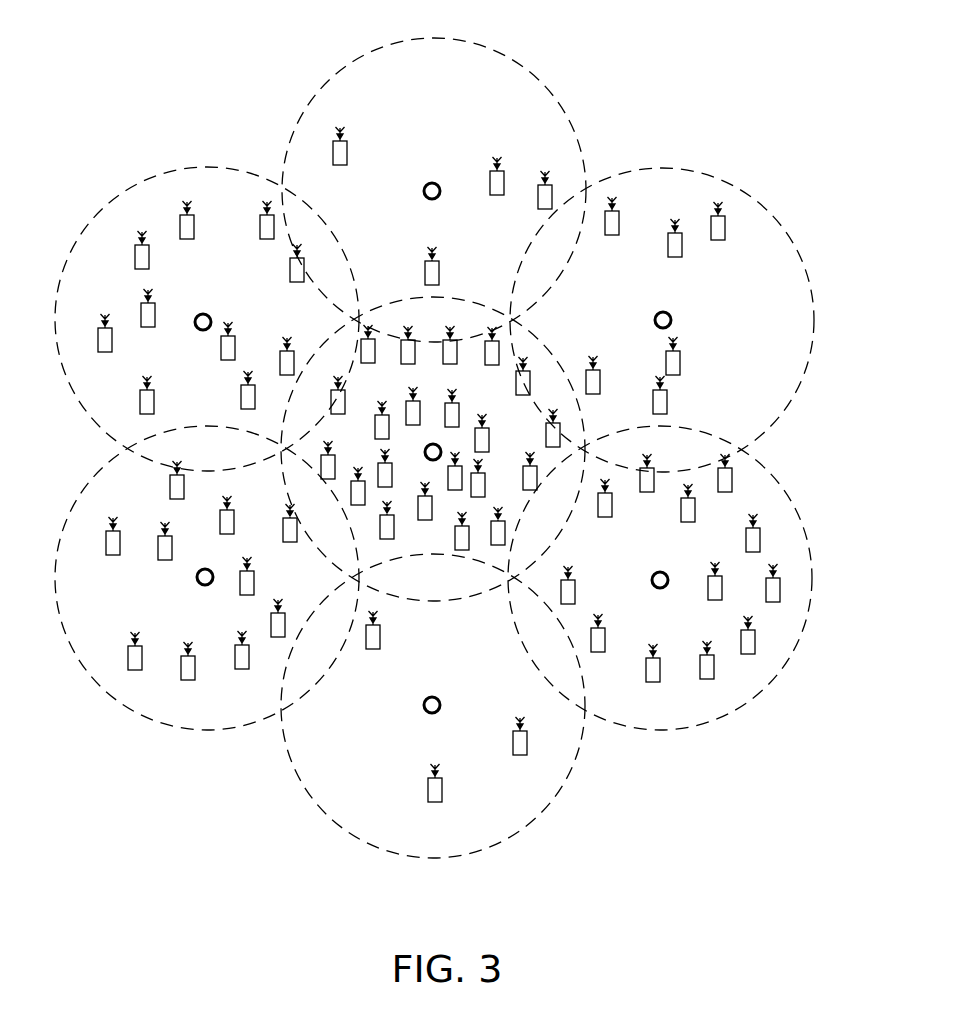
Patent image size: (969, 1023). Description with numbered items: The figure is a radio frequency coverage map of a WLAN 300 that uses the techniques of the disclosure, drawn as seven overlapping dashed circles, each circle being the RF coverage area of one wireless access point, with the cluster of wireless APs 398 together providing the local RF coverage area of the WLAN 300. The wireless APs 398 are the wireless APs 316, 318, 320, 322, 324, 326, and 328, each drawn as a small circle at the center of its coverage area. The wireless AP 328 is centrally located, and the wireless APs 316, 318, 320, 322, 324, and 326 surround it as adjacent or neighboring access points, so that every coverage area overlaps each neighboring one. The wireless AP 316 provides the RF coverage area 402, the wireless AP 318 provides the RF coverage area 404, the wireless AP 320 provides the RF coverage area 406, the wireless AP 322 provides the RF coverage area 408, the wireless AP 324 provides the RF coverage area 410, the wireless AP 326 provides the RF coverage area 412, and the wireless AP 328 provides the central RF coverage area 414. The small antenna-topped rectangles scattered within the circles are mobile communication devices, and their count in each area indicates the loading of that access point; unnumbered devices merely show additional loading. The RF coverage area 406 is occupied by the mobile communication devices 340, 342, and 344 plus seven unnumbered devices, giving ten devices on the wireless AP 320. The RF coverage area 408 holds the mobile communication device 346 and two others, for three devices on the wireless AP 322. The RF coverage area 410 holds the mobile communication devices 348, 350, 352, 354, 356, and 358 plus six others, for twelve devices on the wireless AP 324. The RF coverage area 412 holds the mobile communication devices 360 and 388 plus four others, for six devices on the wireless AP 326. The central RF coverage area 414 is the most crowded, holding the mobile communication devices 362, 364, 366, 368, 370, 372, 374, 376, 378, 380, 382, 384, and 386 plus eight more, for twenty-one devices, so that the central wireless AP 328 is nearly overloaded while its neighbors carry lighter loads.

The WLAN 300 is at (610, 847).
The wireless AP 316 is at (422, 192).
The wireless AP 318 is at (193, 323).
The wireless AP 320 is at (195, 578).
The wireless AP 322 is at (422, 706).
The wireless AP 324 is at (650, 581).
The wireless AP 326 is at (653, 321).
The wireless AP 328 is at (423, 453).
The mobile communication device 340 is at (426, 285).
The mobile communication device 342 is at (261, 239).
The mobile communication device 344 is at (291, 282).
The mobile communication device 346 is at (281, 375).
The mobile communication device 348 is at (242, 409).
The mobile communication device 350 is at (562, 604).
The mobile communication device 352 is at (599, 517).
The mobile communication device 354 is at (641, 492).
The mobile communication device 356 is at (682, 522).
The mobile communication device 358 is at (719, 492).
The mobile communication device 360 is at (654, 414).
The mobile communication device 362 is at (362, 363).
The mobile communication device 364 is at (332, 414).
The mobile communication device 366 is at (322, 479).
The mobile communication device 368 is at (352, 505).
The mobile communication device 370 is at (381, 539).
The mobile communication device 372 is at (456, 550).
The mobile communication device 374 is at (492, 545).
The mobile communication device 376 is at (524, 490).
The mobile communication device 378 is at (547, 447).
The mobile communication device 380 is at (517, 395).
The mobile communication device 382 is at (486, 365).
The mobile communication device 384 is at (437, 370).
The mobile communication device 386 is at (402, 364).
The mobile communication device 388 is at (587, 394).
The wireless access points 398 is at (74, 726).
The RF coverage area 402 is at (551, 94).
The RF coverage area 404 is at (62, 362).
The RF coverage area 406 is at (59, 600).
The RF coverage area 408 is at (286, 749).
The RF coverage area 410 is at (803, 515).
The RF coverage area 412 is at (798, 240).
The RF coverage area 414 is at (397, 600).